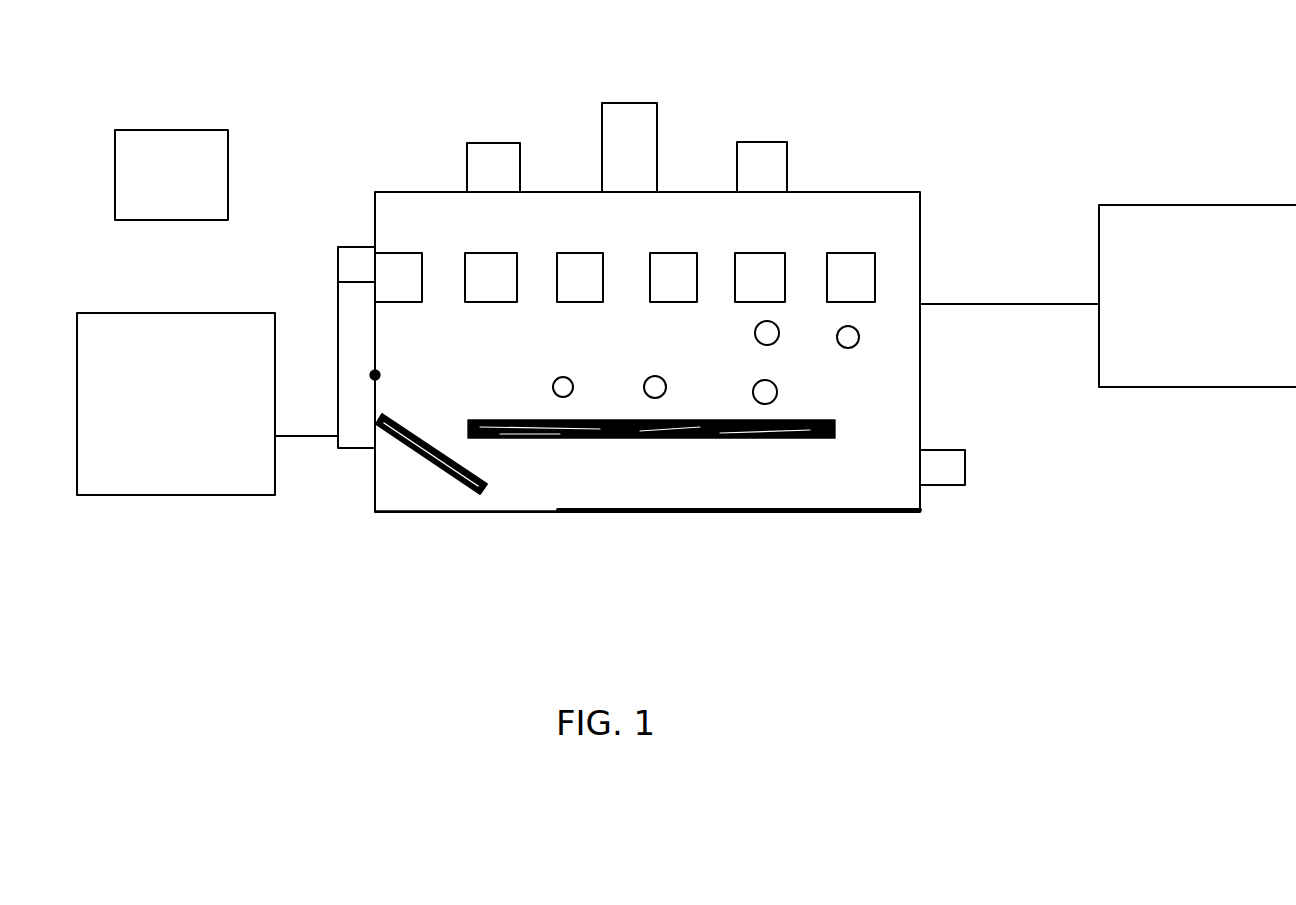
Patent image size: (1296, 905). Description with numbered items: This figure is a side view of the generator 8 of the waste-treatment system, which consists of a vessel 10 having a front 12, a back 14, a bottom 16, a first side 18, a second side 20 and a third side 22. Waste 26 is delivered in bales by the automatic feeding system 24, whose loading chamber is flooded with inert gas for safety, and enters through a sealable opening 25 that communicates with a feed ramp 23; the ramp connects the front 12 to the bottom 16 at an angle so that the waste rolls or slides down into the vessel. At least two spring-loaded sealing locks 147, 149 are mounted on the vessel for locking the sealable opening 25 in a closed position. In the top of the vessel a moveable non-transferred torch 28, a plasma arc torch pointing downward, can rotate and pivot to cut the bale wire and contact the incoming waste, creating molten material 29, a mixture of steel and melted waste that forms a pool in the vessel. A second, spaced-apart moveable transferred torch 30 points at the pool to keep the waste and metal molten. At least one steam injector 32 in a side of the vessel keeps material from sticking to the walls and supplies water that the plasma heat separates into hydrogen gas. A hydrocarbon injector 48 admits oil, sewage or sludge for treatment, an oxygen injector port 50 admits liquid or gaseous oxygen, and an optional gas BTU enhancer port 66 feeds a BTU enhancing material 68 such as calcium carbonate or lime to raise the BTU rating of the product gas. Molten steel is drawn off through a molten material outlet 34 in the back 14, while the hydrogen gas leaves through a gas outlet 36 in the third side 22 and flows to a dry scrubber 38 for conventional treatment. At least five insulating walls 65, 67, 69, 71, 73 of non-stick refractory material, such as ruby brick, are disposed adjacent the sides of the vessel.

The generator 8 is at (547, 164).
The vessel 10 is at (837, 190).
The front 12 is at (680, 190).
The back 14 is at (920, 258).
The bottom 16 is at (777, 512).
The first side 18 is at (650, 512).
The second side 20 is at (505, 512).
The third side 22 is at (338, 280).
The feed ramp 23 is at (433, 470).
The automatic feeding system 24 is at (180, 498).
The sealable opening 25 is at (345, 247).
The waste 26 is at (172, 130).
The moveable non-transferred torch 28 is at (467, 143).
The molten material 29 is at (825, 438).
The moveable transferred torch 30 is at (765, 142).
The steam injector 32 is at (567, 397).
The molten material outlet 34 is at (958, 478).
The gas outlet 36 is at (630, 103).
The dry scrubber 38 is at (1248, 205).
The hydrocarbon injector 48 is at (777, 392).
The oxygen injector port 50 is at (775, 322).
The insulating wall 65 is at (870, 255).
The gas BTU enhancer port 66 is at (660, 397).
The insulating wall 67 is at (393, 265).
The BTU enhancing material 68 is at (858, 342).
The insulating wall 69 is at (573, 260).
The insulating wall 71 is at (688, 260).
The insulating wall 73 is at (780, 258).
The spring-loaded sealing lock 147 is at (375, 378).
The spring-loaded sealing lock 149 is at (338, 357).